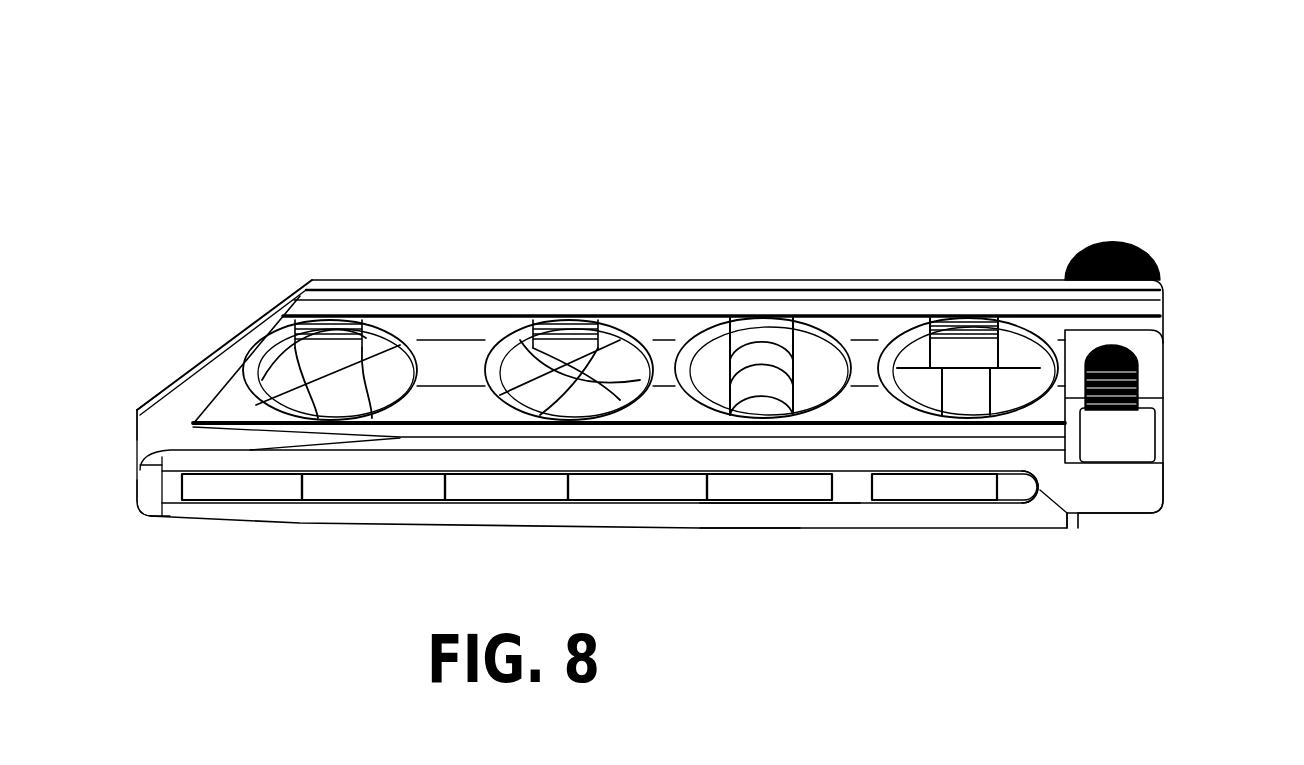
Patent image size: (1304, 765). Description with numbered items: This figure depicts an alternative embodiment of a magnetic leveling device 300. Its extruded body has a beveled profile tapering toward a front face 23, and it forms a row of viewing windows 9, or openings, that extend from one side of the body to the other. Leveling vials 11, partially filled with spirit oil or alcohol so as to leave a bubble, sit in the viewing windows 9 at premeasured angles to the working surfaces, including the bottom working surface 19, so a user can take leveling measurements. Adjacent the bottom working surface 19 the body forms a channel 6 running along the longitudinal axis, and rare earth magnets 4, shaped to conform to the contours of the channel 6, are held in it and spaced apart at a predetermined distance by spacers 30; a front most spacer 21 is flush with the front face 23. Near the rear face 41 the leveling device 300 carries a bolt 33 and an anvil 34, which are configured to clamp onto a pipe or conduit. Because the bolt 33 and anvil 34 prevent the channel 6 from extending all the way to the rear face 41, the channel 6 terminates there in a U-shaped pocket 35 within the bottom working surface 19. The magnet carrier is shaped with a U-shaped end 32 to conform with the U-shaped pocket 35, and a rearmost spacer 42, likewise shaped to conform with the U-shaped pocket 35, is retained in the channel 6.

The leveling device 300 is at (300, 152).
The viewing windows 9 is at (332, 385).
The leveling vials 11 is at (368, 350).
The bolt 33 is at (1160, 276).
The rear face 41 is at (1167, 477).
The anvil 34 is at (1135, 490).
The U-shaped pocket 35 is at (1080, 517).
The U-shaped end 32 is at (1025, 490).
The rearmost spacer 42 is at (1013, 490).
The rare earth magnets 4 is at (243, 487).
The spacers 30 is at (353, 490).
The bottom working surface 19 is at (745, 515).
The channel 6 is at (780, 507).
The front most spacer 21 is at (147, 487).
The front face 23 is at (137, 425).